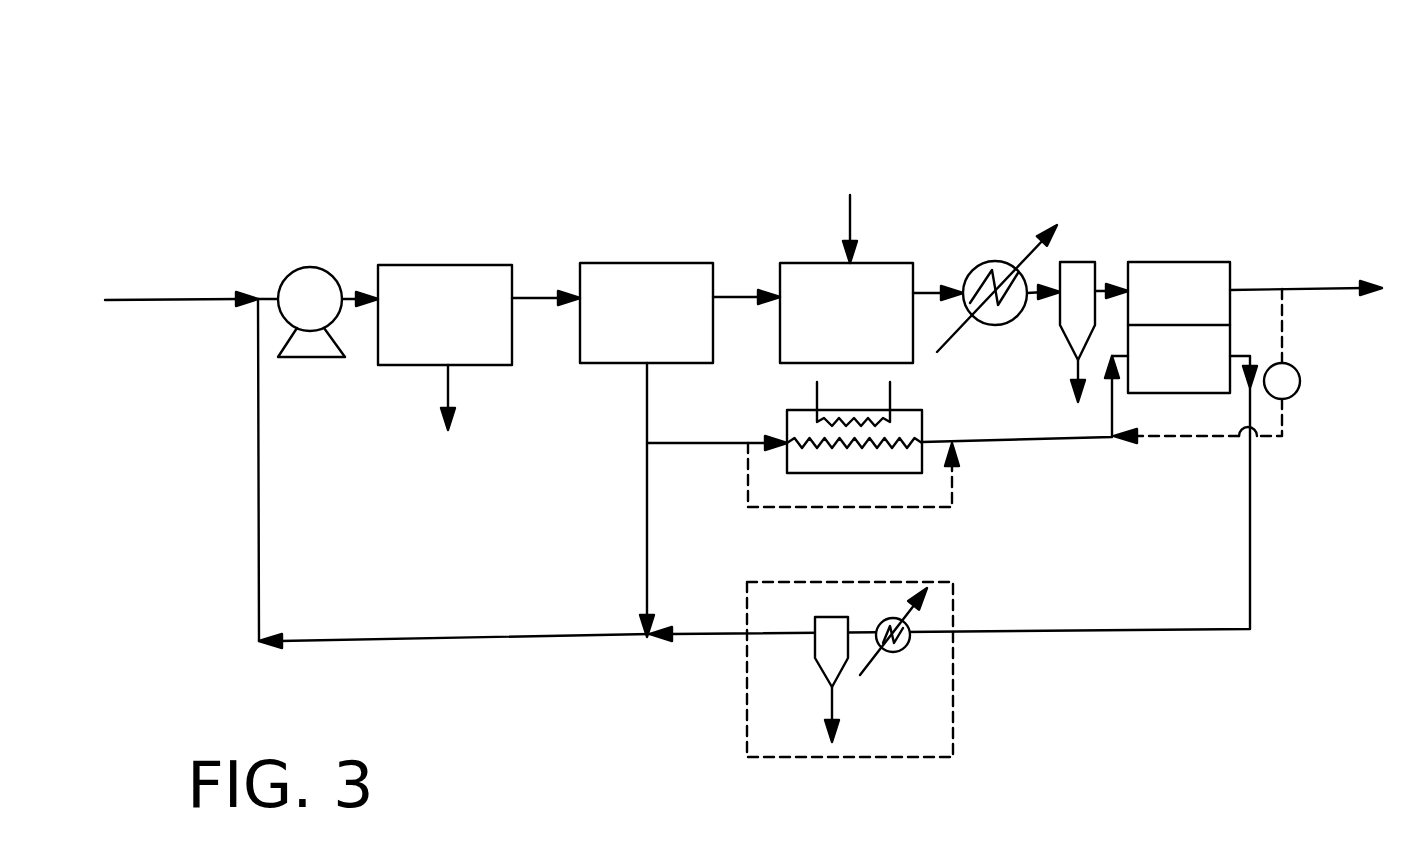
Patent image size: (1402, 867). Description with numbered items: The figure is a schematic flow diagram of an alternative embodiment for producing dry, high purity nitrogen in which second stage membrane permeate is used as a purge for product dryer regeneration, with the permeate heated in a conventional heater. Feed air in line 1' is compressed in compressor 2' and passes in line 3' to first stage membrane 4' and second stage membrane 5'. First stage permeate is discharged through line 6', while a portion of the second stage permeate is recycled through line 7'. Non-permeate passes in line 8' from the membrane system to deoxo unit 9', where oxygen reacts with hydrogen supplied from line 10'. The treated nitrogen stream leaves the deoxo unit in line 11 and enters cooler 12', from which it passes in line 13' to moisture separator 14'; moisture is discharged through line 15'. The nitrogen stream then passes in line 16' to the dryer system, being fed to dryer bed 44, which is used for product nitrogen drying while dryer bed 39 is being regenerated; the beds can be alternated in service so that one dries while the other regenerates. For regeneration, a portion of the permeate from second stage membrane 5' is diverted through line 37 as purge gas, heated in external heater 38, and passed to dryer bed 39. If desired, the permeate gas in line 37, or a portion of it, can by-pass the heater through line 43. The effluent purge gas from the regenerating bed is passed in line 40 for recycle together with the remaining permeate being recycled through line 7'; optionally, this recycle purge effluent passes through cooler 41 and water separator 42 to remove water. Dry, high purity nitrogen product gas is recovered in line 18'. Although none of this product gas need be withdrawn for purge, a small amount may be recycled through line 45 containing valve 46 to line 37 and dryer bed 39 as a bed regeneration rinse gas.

The feed air line 1' is at (181, 271).
The compressor 2' is at (301, 284).
The compressed air line 3' is at (358, 265).
The first stage membrane 4' is at (445, 287).
The second stage membrane 5' is at (646, 284).
The first stage permeate discharge line 6' is at (471, 397).
The permeate recycle line 7' is at (454, 473).
The non-permeate line 8' is at (746, 267).
The deoxo unit 9' is at (854, 290).
The hydrogen line 10' is at (878, 221).
The treated nitrogen line 11 is at (930, 292).
The cooler 12' is at (997, 279).
The cooled nitrogen line 13' is at (1071, 257).
The moisture separator 14' is at (1106, 273).
The moisture discharge line 15' is at (1049, 378).
The nitrogen line to dryer 16' is at (1137, 259).
The product nitrogen line 18' is at (1306, 265).
The purge gas line 37 is at (688, 443).
The external heater 38 is at (918, 415).
The dryer bed undergoing regeneration 39 is at (1218, 343).
The purge effluent recycle line 40 is at (1159, 629).
The cooler 41 is at (917, 632).
The water separator 42 is at (747, 688).
The heater by-pass line 43 is at (883, 507).
The dryer bed 44 is at (1210, 262).
The product recycle line 45 is at (1284, 338).
The valve 46 is at (1297, 389).